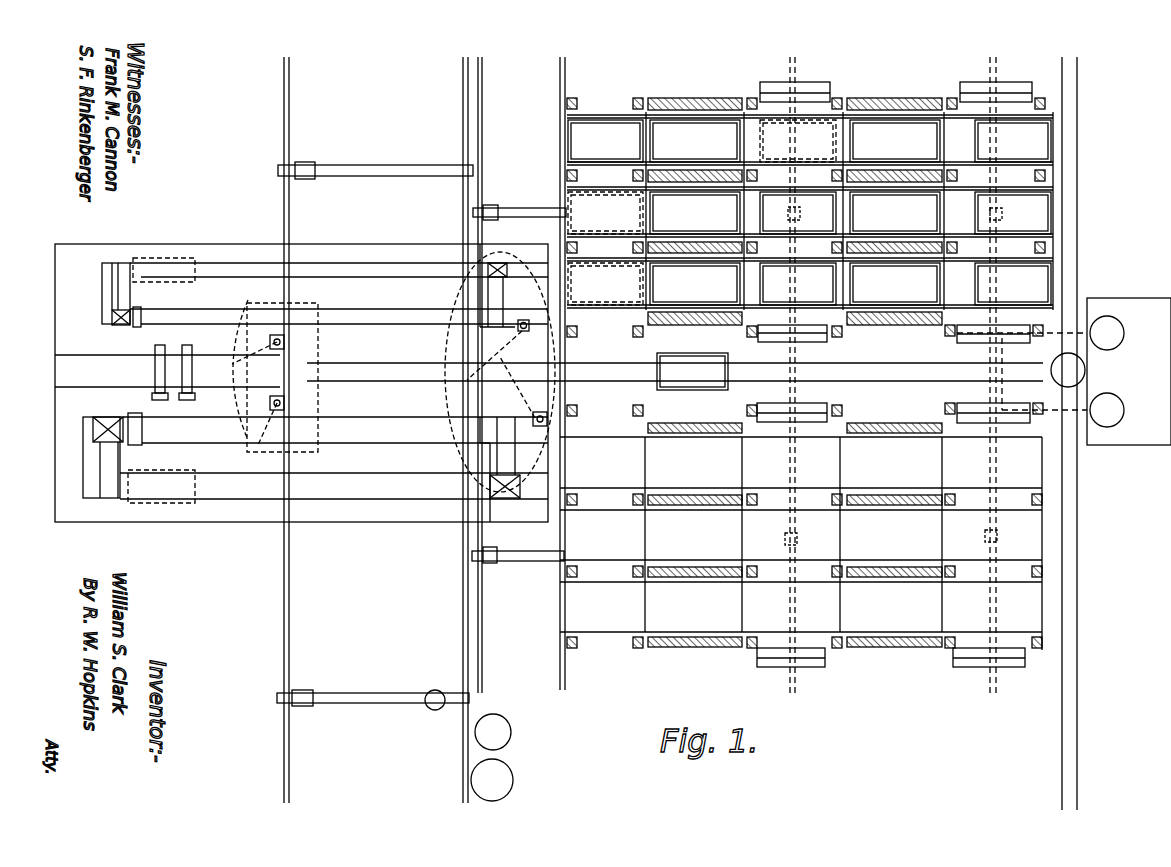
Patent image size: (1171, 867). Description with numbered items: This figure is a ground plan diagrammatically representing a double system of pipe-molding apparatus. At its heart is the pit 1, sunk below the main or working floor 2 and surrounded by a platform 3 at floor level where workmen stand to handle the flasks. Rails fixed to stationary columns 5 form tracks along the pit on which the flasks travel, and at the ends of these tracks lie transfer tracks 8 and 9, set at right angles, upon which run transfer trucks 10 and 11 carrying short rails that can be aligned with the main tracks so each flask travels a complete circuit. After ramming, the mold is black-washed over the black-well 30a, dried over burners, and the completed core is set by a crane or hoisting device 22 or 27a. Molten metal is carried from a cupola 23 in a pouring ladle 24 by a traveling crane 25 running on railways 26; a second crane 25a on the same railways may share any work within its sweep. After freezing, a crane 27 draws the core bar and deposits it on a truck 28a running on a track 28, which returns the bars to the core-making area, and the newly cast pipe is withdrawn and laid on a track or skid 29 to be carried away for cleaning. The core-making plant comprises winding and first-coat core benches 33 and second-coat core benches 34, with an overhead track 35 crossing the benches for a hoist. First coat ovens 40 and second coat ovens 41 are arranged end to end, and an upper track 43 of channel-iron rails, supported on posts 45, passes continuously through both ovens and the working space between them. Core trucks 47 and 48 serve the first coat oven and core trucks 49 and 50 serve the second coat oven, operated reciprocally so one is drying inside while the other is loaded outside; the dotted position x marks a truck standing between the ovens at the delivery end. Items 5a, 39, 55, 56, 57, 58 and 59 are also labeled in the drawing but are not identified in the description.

The pit 1 is at (172, 310).
The main or working floor 2 is at (289, 393).
The platform 3 is at (205, 537).
The stationary columns 5 is at (210, 246).
The platform rail 5a is at (350, 372).
The transfer track 8 is at (126, 293).
The transfer track 9 is at (500, 300).
The transfer truck 10 is at (118, 328).
The transfer truck 11 is at (507, 266).
The crane or hoisting device 22 is at (525, 210).
The cupola 23 is at (500, 775).
The pouring ladle 24 is at (437, 690).
The traveling crane 25 is at (355, 696).
The second crane 25a is at (378, 170).
The railways 26 is at (289, 576).
The crane 27 is at (270, 340).
The hoisting device 27a is at (526, 332).
The track 28 is at (432, 366).
The truck 28a is at (676, 356).
The track or skid 29 is at (215, 352).
The black-well 30a is at (150, 262).
The winding and first-coat core benches 33 is at (972, 82).
The second-coat core benches 34 is at (1111, 371).
The overhead track 35 is at (970, 404).
The shaft bearing 39 is at (775, 82).
The first coat oven 40 is at (891, 376).
The second coat oven 41 is at (693, 376).
The upper track 43 is at (810, 361).
The posts 45 is at (577, 104).
The core truck 47 is at (912, 162).
The core truck 48 is at (1005, 158).
The core truck 49 is at (705, 160).
The core truck 50 is at (258, 420).
The bearing box 55 is at (972, 343).
The coupling 56 is at (786, 604).
The coupling 57 is at (772, 342).
The coupling 58 is at (788, 213).
The bearing box 59 is at (775, 403).
The truck position x is at (804, 142).